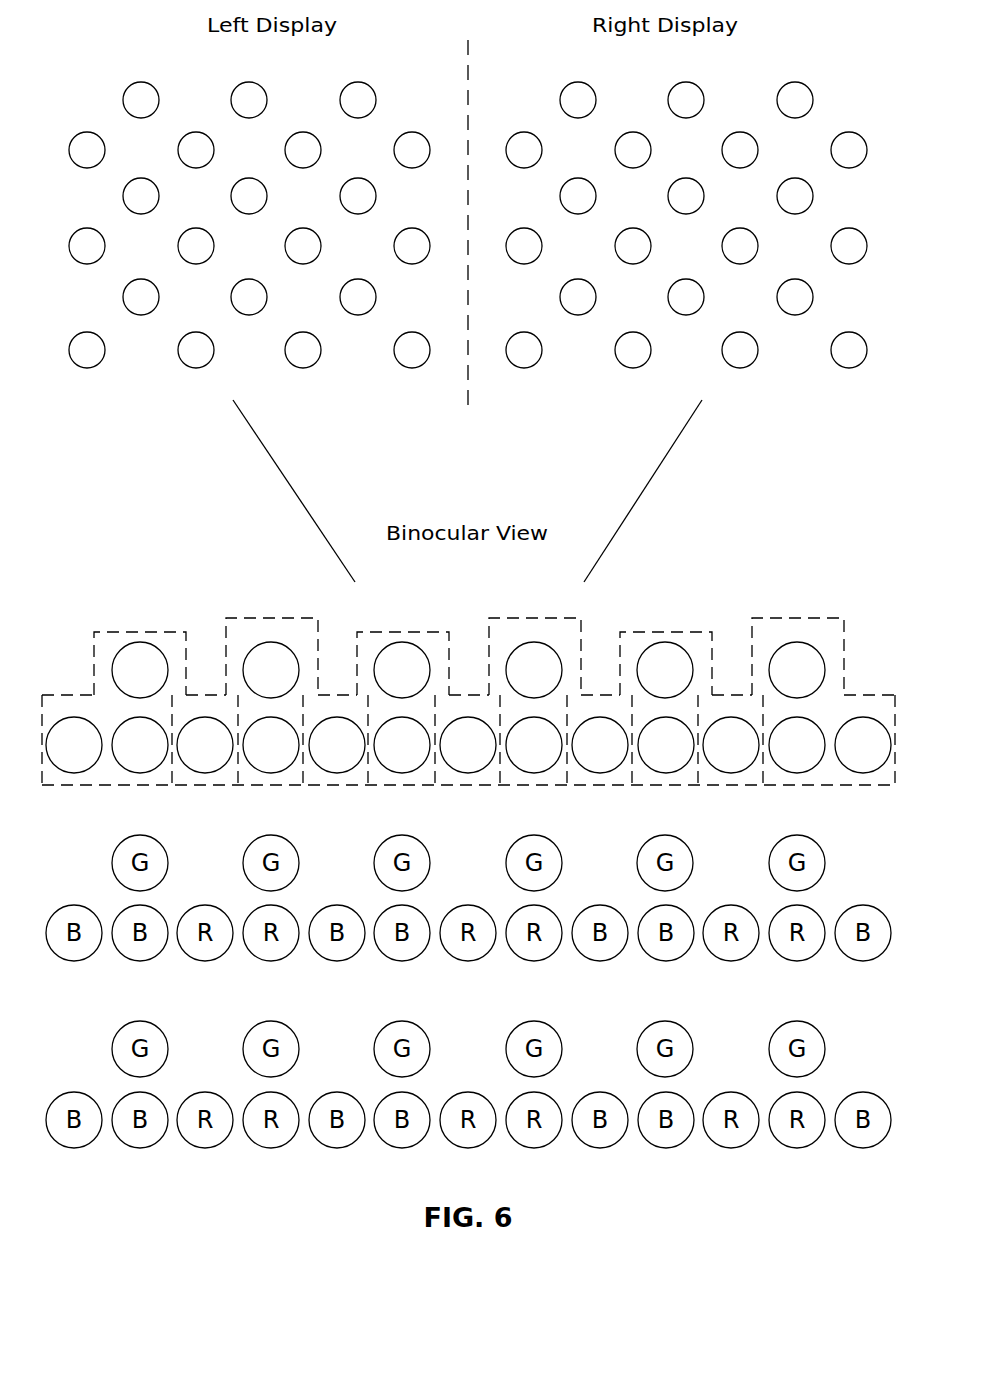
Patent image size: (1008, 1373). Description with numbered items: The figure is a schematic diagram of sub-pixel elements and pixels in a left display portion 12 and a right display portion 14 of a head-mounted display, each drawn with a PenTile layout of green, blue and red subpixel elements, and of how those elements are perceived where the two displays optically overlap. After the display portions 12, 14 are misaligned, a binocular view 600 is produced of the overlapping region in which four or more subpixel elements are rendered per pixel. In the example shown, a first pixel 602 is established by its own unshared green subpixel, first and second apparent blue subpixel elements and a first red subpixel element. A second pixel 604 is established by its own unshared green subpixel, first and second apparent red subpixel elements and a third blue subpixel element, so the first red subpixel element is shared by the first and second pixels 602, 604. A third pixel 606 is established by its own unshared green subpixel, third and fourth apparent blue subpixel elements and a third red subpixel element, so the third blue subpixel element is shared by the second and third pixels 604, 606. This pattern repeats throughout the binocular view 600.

The left display portion 12 is at (82, 100).
The right display portion 14 is at (839, 100).
The binocular view 600 is at (783, 612).
The first pixel 602 is at (97, 651).
The second pixel 604 is at (228, 632).
The third pixel 606 is at (398, 633).